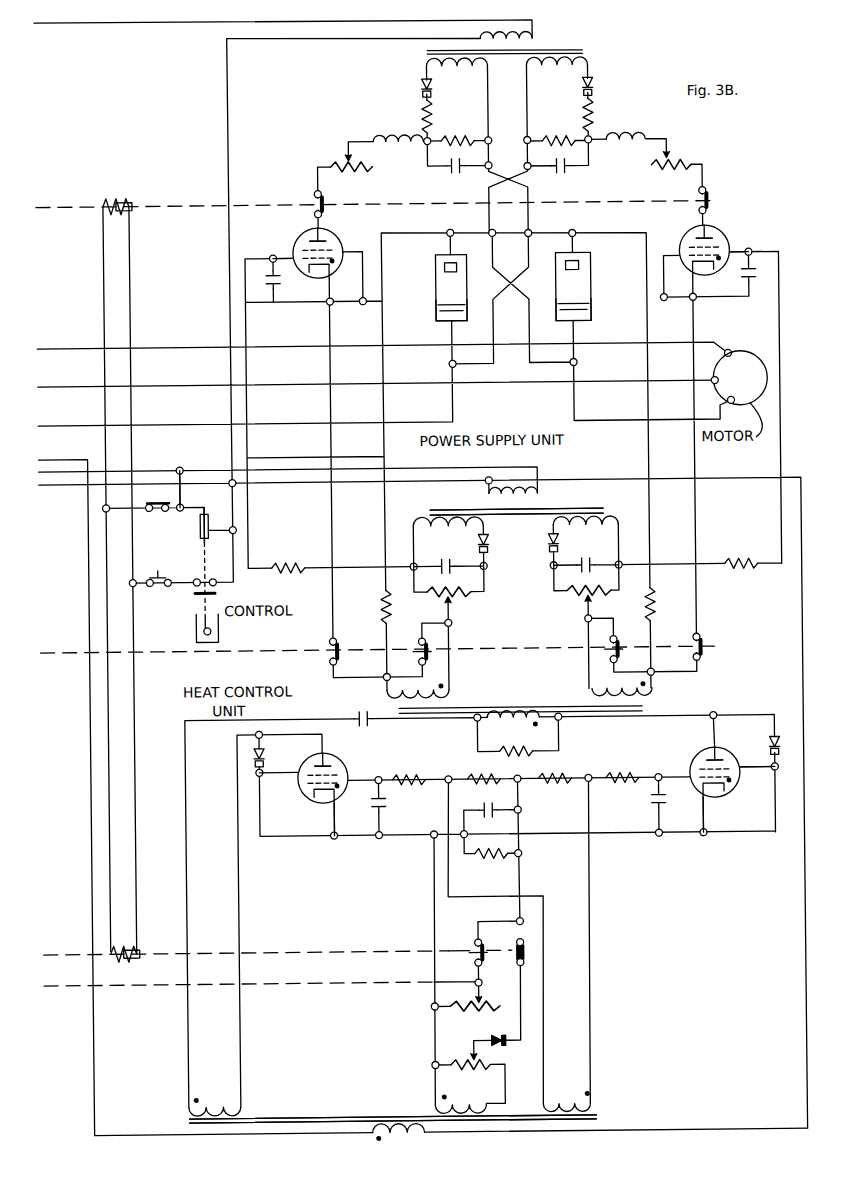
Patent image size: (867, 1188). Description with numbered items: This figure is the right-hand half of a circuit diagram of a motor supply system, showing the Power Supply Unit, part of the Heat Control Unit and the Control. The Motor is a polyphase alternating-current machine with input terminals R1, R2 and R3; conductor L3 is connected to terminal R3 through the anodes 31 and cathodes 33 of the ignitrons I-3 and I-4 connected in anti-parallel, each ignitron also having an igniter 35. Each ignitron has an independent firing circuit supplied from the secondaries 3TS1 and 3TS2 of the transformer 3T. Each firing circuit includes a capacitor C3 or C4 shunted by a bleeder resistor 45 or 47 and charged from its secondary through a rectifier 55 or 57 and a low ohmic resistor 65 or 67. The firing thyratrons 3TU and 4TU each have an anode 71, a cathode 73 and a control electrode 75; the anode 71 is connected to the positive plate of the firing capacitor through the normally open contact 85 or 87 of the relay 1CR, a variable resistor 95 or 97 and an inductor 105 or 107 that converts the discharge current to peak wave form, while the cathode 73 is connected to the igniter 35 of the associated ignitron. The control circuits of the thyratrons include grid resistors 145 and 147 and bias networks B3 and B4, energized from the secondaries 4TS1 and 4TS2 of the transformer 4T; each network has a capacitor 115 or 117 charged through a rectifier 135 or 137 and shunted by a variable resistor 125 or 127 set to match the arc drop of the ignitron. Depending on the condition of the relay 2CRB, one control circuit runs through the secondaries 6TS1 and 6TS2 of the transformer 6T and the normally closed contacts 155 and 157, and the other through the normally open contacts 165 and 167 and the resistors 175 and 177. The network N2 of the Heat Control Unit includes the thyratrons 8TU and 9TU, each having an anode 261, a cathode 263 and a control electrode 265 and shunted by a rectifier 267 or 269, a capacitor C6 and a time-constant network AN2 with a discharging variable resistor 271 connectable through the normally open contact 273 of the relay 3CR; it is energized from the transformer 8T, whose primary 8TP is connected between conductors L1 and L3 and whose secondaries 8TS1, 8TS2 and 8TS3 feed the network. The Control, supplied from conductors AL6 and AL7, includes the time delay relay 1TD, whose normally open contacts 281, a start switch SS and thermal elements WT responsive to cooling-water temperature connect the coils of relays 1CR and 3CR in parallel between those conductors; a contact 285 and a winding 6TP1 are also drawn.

The transformer 3T is at (580, 51).
The secondary 3TS1 is at (482, 70).
The secondary 3TS2 is at (568, 70).
The rectifier 55 is at (425, 85).
The rectifier 57 is at (600, 85).
The low ohmic resistor 65 is at (426, 111).
The low ohmic resistor 67 is at (598, 111).
The bleeder resistor 45 is at (464, 136).
The bleeder resistor 47 is at (562, 136).
The inductor 105 is at (386, 137).
The inductor 107 is at (628, 138).
The variable resistor 95 is at (379, 166).
The variable resistor 97 is at (656, 168).
The capacitor C3 is at (459, 174).
The capacitor C4 is at (571, 175).
The normally open contact 85 is at (322, 200).
The normally open contact 87 is at (699, 200).
The relay 1CR is at (124, 198).
The thyratron 3TU is at (326, 242).
The thyratron 4TU is at (721, 236).
The anode 71 is at (332, 240).
The control electrode 75 is at (296, 254).
The cathode 73 is at (314, 276).
The anode 31 is at (446, 263).
The ignitron I-3 is at (439, 274).
The ignitron I-4 is at (594, 278).
The igniter 35 is at (436, 306).
The cathode 33 is at (439, 314).
The input terminal R1 is at (737, 354).
The input terminal R2 is at (721, 383).
The input terminal R3 is at (731, 402).
The water temperature contact WT is at (166, 501).
The conductor AL6 is at (184, 498).
The time delay relay 1TD is at (201, 520).
The start switch SS is at (168, 560).
The normally open contacts 281 is at (192, 591).
The conductor AL7 is at (237, 584).
The grid resistor 145 is at (300, 561).
The grid resistor 147 is at (735, 562).
The transformer 4T is at (474, 510).
The secondary 4TS1 is at (410, 522).
The secondary 4TS2 is at (602, 521).
The biasing network B3 is at (507, 575).
The biasing network B4 is at (539, 575).
The rectifier 135 is at (479, 541).
The rectifier 137 is at (550, 539).
The capacitor 115 is at (447, 562).
The capacitor 117 is at (579, 561).
The resistor 175 is at (384, 597).
The variable resistor 125 is at (440, 599).
The variable resistor 127 is at (577, 598).
The resistor 177 is at (651, 596).
The normally closed contact 155 is at (327, 646).
The normally open contact 165 is at (430, 642).
The normally open contact 167 is at (640, 631).
The normally closed contact 157 is at (702, 640).
The relay 2CRB is at (500, 646).
The secondary 6TS1 is at (452, 693).
The secondary 6TS2 is at (589, 696).
The transformer 6T is at (645, 708).
The capacitor C6 is at (365, 708).
The transformer primary winding 6TP1 is at (524, 720).
The thyratron 8TU is at (319, 751).
The thyratron 9TU is at (707, 739).
The rectifier 267 is at (265, 750).
The rectifier 269 is at (766, 739).
The anode 261 is at (336, 755).
The control electrode 265 is at (292, 781).
The cathode 263 is at (318, 802).
The time-constant network AN2 is at (562, 863).
The network N2 is at (640, 893).
The relay 3CR is at (135, 955).
The normally open contact 273 is at (466, 956).
The contact 285 is at (522, 951).
The discharging variable resistor 271 is at (471, 1015).
The secondary 8TS1 is at (222, 1087).
The secondary 8TS2 is at (556, 1095).
The secondary 8TS3 is at (443, 1097).
The transformer 8T is at (596, 1118).
The primary 8TP is at (398, 1145).
The conductor L1 is at (470, 1139).
The conductor L3 is at (269, 1139).